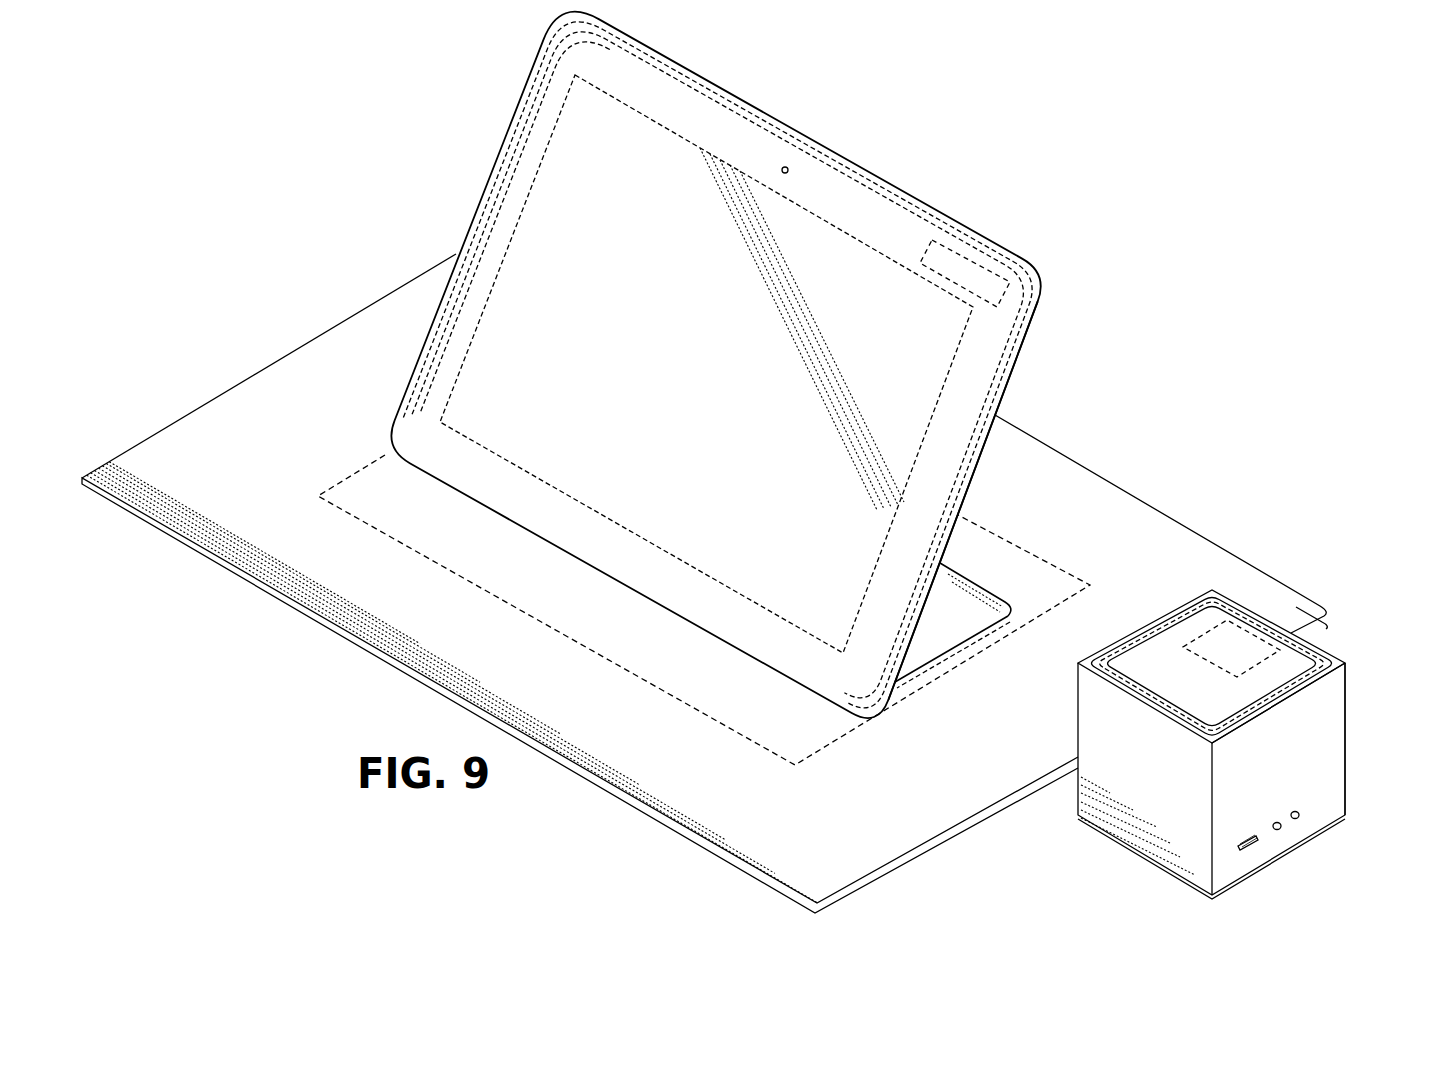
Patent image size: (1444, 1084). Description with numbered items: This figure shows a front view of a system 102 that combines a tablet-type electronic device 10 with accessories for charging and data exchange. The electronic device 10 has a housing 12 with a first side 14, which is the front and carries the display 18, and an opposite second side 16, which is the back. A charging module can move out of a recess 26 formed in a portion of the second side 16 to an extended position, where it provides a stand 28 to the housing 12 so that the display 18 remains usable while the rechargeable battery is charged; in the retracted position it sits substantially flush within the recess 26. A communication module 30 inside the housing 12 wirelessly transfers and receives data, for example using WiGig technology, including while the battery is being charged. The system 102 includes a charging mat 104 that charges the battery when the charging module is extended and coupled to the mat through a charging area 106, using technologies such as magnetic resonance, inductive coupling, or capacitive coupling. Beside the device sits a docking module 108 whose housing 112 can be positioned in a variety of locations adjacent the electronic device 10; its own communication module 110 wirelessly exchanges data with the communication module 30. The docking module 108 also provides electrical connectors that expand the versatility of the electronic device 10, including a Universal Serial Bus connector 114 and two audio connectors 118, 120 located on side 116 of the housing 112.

The electronic device 10 is at (820, 144).
The housing 12 is at (975, 485).
The first side 14 is at (452, 322).
The second side 16 is at (1010, 405).
The display 18 is at (727, 360).
The recess 26 is at (945, 566).
The stand 28 is at (952, 648).
The communication module 30 is at (978, 247).
The system 102 is at (1116, 162).
The charging mat 104 is at (270, 368).
The charging area 106 is at (545, 623).
The docking module 108 is at (1342, 657).
The communication module 110 is at (1175, 603).
The housing 112 is at (1350, 720).
The Universal Serial Bus (USB) connector 114 is at (1252, 850).
The side 116 is at (1347, 785).
The audio connector 118 is at (1278, 831).
The audio connector 120 is at (1297, 818).